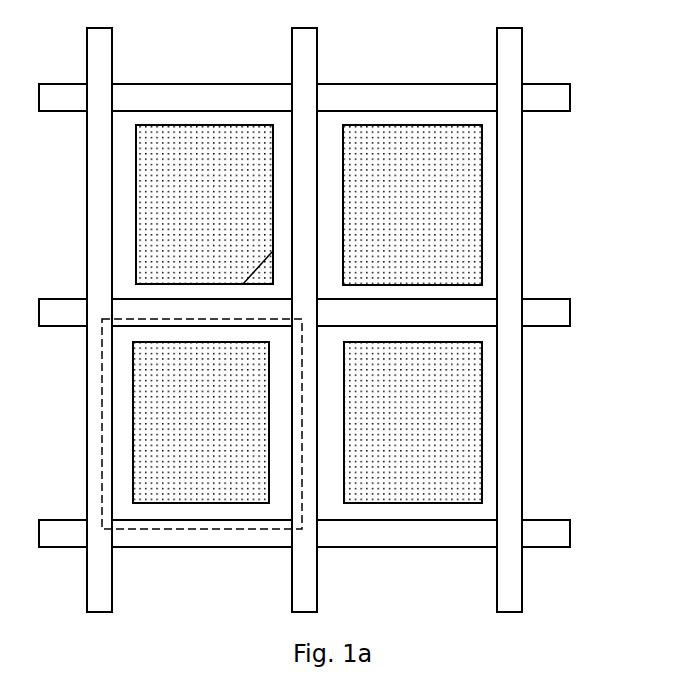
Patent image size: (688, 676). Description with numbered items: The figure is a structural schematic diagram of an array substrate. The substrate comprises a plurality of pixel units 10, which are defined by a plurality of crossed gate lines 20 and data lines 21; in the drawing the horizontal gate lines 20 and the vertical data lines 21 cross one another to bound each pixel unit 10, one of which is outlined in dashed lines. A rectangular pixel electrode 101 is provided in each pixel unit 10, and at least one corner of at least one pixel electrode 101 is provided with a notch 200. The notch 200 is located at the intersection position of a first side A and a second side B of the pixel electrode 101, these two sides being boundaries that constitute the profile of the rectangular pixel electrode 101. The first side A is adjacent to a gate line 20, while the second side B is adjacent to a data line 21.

The pixel unit 10 is at (103, 427).
The gate line 20 is at (558, 95).
The data line 21 is at (515, 228).
The pixel electrode 101 is at (153, 157).
The notch 200 is at (265, 275).
The first side A is at (212, 285).
The second side B is at (272, 147).